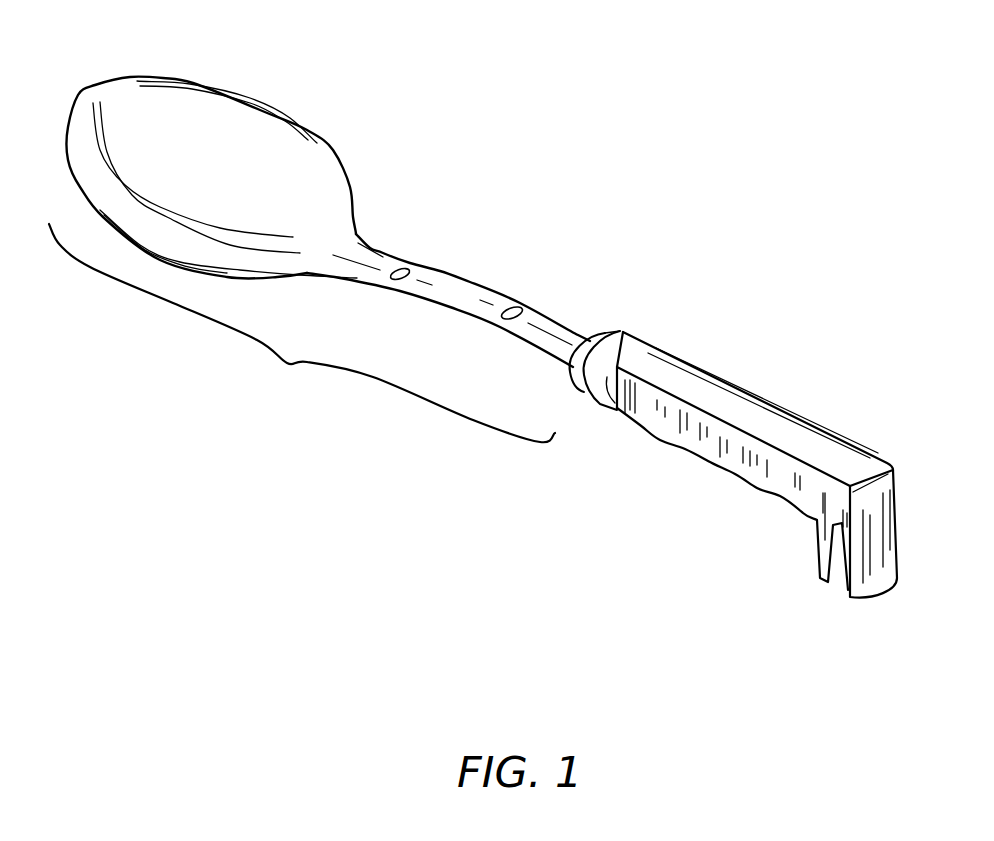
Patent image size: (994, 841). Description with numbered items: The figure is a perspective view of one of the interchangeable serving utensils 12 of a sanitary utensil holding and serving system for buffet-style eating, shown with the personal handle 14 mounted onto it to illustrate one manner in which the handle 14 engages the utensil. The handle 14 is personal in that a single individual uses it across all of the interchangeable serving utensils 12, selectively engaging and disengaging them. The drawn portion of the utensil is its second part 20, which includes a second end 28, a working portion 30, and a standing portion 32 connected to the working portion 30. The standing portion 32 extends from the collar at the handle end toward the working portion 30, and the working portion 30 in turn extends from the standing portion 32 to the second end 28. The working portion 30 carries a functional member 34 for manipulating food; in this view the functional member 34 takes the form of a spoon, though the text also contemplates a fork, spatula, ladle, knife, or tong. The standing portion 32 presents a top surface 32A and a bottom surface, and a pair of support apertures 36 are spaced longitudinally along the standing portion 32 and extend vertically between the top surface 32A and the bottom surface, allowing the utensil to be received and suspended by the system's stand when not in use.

The interchangeable serving utensil 12 is at (490, 165).
The personal handle 14 is at (718, 397).
The second part 20 is at (302, 333).
The second end 28 is at (82, 88).
The working portion 30 is at (334, 150).
The standing portion 32 is at (548, 327).
The top surface 32A is at (455, 298).
The functional member 34 is at (262, 135).
The support apertures 36 is at (405, 272).